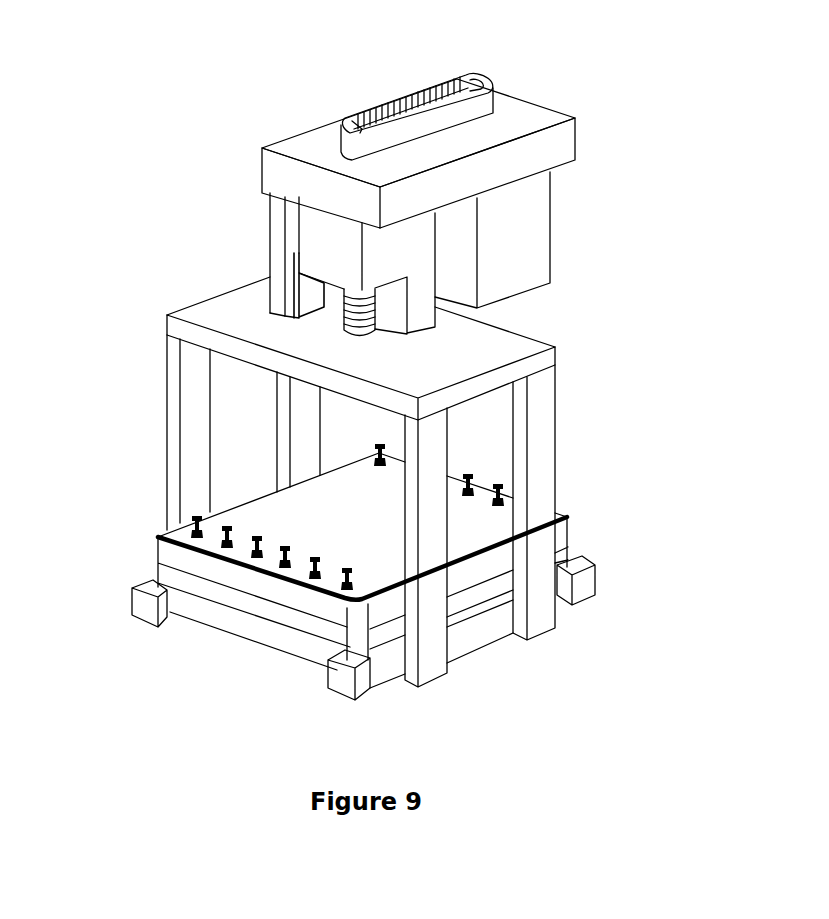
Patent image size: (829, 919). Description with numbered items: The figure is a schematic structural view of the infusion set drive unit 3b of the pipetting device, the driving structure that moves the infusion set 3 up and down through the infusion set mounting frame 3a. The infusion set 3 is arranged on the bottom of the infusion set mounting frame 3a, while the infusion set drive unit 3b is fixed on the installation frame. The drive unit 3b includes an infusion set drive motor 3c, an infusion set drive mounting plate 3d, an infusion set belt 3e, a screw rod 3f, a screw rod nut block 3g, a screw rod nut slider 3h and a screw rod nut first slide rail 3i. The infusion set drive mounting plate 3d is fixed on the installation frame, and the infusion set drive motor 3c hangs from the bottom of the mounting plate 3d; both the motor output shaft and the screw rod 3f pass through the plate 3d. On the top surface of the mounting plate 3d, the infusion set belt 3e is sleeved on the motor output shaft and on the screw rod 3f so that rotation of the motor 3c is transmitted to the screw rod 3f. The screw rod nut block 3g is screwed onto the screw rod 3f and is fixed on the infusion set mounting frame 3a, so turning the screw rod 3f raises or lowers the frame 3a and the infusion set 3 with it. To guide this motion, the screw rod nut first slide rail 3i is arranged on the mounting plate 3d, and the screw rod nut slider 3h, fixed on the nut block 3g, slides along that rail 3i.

The infusion set 3 is at (296, 641).
The infusion set mounting frame 3a is at (197, 413).
The infusion set drive unit 3b is at (562, 111).
The infusion set drive motor 3c is at (512, 270).
The infusion set drive mounting plate 3d is at (515, 113).
The infusion set belt 3e is at (495, 84).
The screw rod 3f is at (344, 308).
The screw rod nut block 3g is at (323, 255).
The screw rod nut slider 3h is at (297, 218).
The screw rod nut first slide rail 3i is at (276, 300).